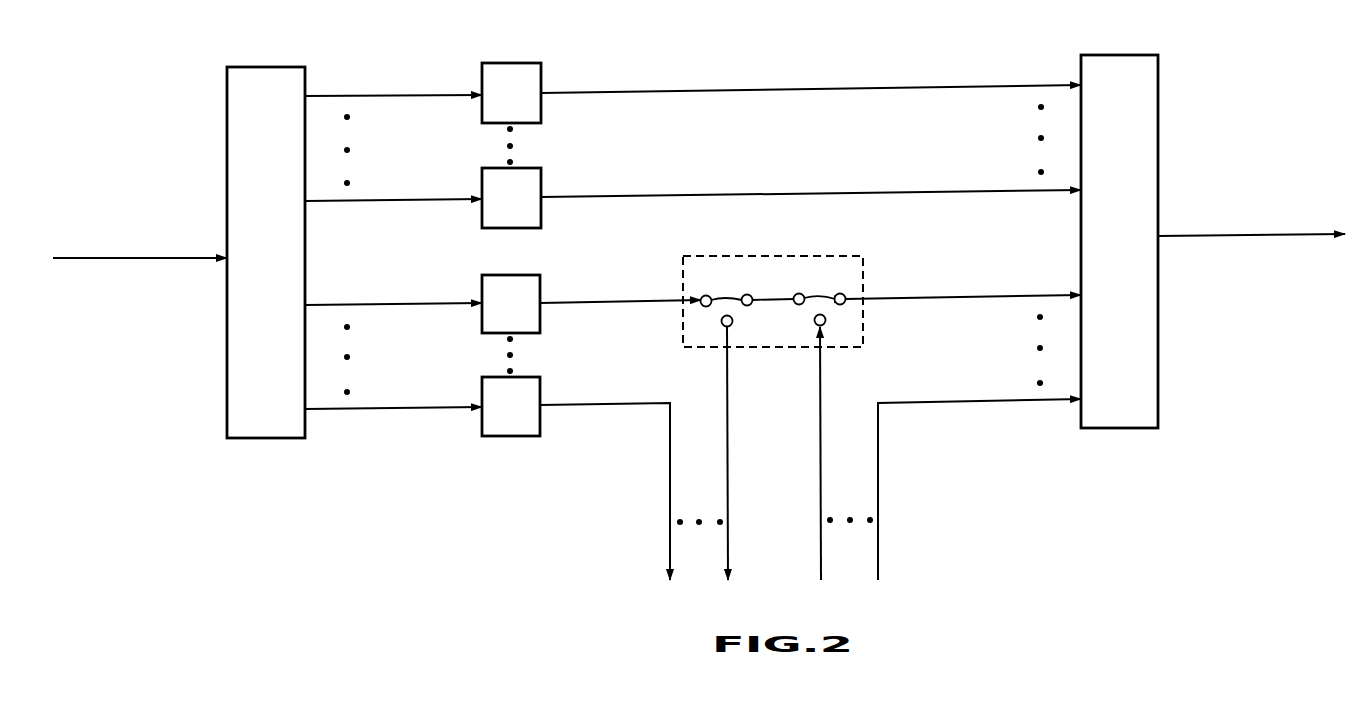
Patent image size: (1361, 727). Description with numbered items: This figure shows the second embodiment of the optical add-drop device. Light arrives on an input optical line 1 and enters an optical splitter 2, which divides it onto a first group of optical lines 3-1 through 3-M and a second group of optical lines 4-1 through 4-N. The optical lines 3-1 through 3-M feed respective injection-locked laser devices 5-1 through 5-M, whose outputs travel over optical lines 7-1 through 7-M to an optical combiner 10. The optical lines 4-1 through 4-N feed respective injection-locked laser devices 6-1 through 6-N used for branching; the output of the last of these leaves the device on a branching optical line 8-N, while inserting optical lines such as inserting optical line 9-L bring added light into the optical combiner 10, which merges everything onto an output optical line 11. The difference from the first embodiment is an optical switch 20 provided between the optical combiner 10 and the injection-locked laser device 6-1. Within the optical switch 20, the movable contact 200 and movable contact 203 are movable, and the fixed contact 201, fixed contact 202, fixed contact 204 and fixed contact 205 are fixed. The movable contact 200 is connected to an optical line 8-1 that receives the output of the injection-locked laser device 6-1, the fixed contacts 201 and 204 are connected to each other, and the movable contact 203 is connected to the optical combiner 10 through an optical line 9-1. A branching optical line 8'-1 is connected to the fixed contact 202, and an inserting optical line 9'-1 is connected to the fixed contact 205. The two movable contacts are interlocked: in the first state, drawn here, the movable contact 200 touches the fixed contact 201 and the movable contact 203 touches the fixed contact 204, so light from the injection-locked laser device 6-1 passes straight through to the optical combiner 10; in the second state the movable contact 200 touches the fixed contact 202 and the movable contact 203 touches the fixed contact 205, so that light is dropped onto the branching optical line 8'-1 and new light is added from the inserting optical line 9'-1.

The input optical line 1 is at (55, 258).
The optical splitter 2 is at (266, 66).
The optical line 3-1 is at (393, 112).
The optical line 3-M is at (393, 215).
The optical line 4-1 is at (393, 321).
The optical line 4-N is at (393, 424).
The injection-locked laser device 5-1 is at (490, 63).
The injection-locked laser device 5-M is at (492, 168).
The injection-locked laser device 6-1 is at (492, 275).
The injection-locked laser device 6-N is at (492, 377).
The optical line 7-1 is at (811, 104).
The optical line 7-M is at (811, 207).
The optical line 8-1 is at (620, 289).
The branching optical line 8-N is at (605, 480).
The branching optical line 8'-1 is at (763, 453).
The optical line 9-1 is at (963, 283).
The inserting optical line 9-L is at (979, 476).
The inserting optical line 9'-1 is at (783, 453).
The optical combiner 10 is at (1127, 55).
The output optical line 11 is at (1174, 236).
The optical switch 20 is at (792, 256).
The movable contact 200 is at (701, 299).
The fixed contact 201 is at (747, 294).
The fixed contact 202 is at (723, 326).
The movable contact 203 is at (847, 297).
The fixed contact 204 is at (808, 288).
The fixed contact 205 is at (824, 326).